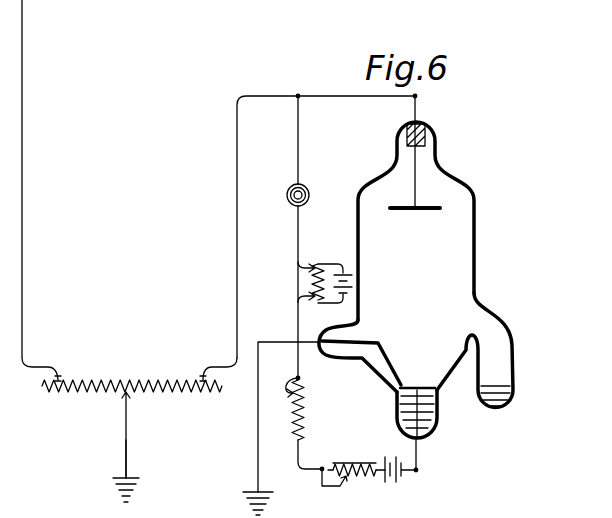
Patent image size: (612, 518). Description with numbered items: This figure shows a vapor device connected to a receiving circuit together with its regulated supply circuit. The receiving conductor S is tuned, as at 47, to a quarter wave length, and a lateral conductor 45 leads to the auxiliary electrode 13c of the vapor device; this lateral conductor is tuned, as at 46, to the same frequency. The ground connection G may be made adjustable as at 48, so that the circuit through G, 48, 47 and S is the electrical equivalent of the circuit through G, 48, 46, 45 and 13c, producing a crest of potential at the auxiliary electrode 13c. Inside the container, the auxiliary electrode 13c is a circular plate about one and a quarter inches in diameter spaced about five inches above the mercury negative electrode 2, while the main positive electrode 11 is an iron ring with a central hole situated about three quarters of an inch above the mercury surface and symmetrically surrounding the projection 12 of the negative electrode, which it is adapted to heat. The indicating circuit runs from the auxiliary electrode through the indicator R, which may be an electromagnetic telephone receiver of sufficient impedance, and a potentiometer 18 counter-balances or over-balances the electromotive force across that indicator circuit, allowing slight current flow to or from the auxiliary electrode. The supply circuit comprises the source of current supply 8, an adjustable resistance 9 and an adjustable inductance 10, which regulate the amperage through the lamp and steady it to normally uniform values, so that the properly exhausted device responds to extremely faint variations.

The receiving conductor S is at (41, 190).
The lateral conductor 45 is at (237, 177).
The tuning means of lateral conductor 46 is at (132, 375).
The tuning means of receiving conductor 47 is at (130, 418).
The adjustable ground connection element 48 is at (143, 449).
The ground connection G is at (134, 492).
The indicator R is at (306, 188).
The potentiometer 18 is at (325, 270).
The adjustable resistance 9 is at (298, 422).
The adjustable inductance 10 is at (352, 483).
The source of current supply 8 is at (401, 459).
The auxiliary electrode 13c is at (415, 166).
The mercury negative electrode 2 is at (444, 412).
The positive electrode 11 is at (418, 388).
The projection of the negative electrode 12 is at (443, 383).